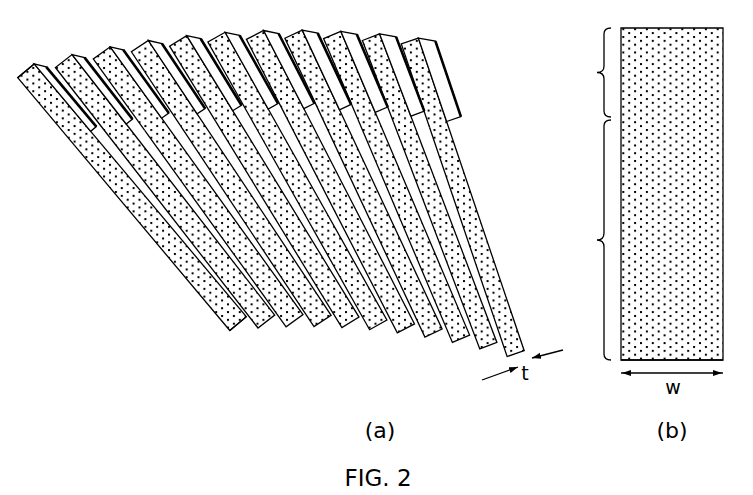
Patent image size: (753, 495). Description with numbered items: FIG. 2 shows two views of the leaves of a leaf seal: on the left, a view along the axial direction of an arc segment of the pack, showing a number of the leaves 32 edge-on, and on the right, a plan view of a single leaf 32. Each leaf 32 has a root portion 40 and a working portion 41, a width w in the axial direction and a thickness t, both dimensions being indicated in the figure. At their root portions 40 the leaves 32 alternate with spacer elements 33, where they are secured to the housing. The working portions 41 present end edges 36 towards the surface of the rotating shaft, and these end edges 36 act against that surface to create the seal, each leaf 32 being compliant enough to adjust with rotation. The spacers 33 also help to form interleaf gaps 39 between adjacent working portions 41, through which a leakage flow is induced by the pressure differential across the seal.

The leaf 32 is at (374, 211).
The spacer element 33 is at (43, 67).
The end edge 36 is at (231, 323).
The interleaf gap 39 is at (427, 143).
The root portion 40 is at (63, 117).
The working portion 41 is at (160, 232).